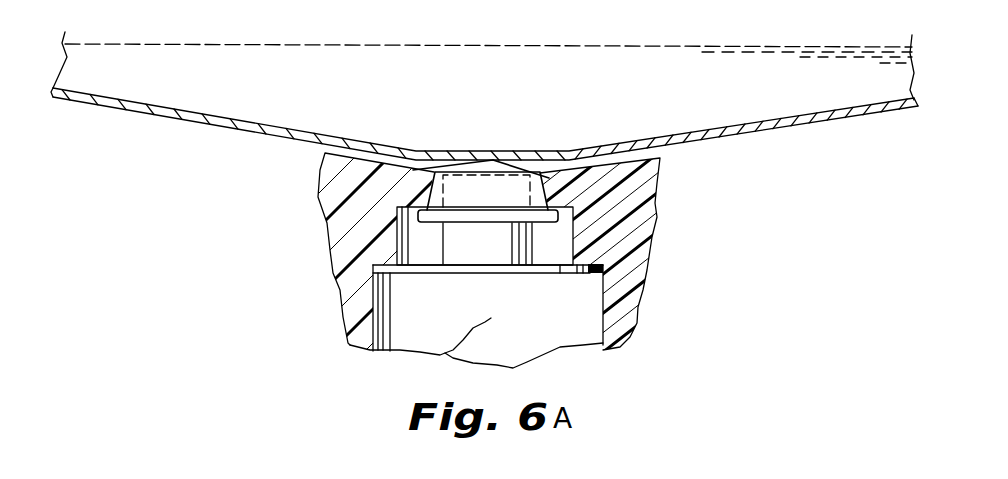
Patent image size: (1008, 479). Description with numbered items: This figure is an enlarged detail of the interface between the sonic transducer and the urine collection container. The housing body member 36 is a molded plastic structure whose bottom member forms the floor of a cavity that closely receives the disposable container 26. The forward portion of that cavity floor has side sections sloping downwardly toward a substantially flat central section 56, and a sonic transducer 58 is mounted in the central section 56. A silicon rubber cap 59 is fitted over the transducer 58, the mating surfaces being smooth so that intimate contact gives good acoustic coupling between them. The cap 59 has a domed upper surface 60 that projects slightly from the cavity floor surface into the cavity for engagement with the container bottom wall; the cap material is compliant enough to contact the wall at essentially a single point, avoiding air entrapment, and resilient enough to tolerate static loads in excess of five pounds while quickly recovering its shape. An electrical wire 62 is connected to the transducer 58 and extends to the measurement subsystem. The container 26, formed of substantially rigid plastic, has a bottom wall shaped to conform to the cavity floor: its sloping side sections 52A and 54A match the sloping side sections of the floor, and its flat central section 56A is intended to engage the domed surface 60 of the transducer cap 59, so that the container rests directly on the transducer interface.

The disposable container 26 is at (484, 108).
The sloping side section 52A is at (207, 114).
The sloping side section 54A is at (774, 119).
The housing body member 36 is at (322, 264).
The central section 56 is at (437, 170).
The flat central section 56A is at (469, 151).
The sonic transducer 58 is at (533, 240).
The silicon rubber cap 59 is at (557, 198).
The domed upper surface 60 is at (492, 153).
The electrical wire 62 is at (491, 267).